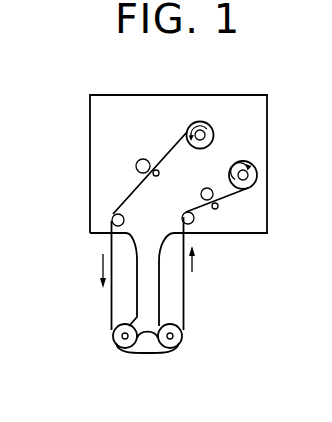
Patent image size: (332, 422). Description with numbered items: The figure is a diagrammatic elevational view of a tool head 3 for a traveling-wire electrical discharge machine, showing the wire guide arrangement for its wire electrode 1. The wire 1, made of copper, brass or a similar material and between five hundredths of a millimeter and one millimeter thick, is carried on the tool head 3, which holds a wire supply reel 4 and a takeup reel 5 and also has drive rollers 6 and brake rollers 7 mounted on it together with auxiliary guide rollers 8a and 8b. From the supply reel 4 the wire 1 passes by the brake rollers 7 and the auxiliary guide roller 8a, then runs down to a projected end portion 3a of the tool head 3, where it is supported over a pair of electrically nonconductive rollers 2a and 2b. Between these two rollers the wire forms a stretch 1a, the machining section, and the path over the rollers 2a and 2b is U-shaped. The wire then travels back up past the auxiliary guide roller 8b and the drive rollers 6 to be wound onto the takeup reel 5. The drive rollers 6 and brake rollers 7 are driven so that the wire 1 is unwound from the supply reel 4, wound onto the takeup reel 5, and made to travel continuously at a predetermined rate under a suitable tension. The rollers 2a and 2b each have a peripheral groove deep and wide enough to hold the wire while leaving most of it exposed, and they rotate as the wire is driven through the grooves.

The wire electrode 1 is at (110, 303).
The stretch 1a is at (149, 353).
The electrically nonconductive roller 2a is at (117, 346).
The electrically nonconductive roller 2b is at (181, 347).
The tool head 3 is at (90, 133).
The projected end portion 3a is at (160, 283).
The wire supply reel 4 is at (187, 128).
The takeup reel 5 is at (257, 174).
The drive rollers 6 is at (232, 200).
The brake rollers 7 is at (136, 167).
The auxiliary guide roller 8a is at (91, 234).
The auxiliary guide roller 8b is at (186, 224).